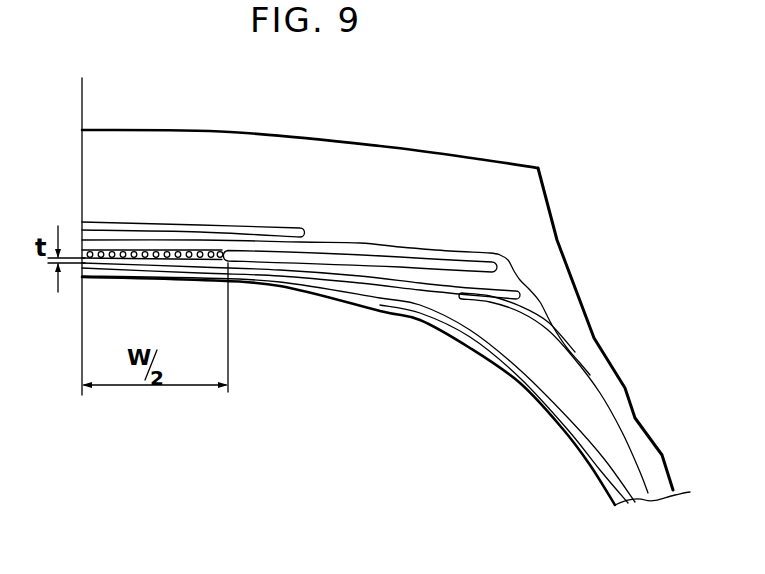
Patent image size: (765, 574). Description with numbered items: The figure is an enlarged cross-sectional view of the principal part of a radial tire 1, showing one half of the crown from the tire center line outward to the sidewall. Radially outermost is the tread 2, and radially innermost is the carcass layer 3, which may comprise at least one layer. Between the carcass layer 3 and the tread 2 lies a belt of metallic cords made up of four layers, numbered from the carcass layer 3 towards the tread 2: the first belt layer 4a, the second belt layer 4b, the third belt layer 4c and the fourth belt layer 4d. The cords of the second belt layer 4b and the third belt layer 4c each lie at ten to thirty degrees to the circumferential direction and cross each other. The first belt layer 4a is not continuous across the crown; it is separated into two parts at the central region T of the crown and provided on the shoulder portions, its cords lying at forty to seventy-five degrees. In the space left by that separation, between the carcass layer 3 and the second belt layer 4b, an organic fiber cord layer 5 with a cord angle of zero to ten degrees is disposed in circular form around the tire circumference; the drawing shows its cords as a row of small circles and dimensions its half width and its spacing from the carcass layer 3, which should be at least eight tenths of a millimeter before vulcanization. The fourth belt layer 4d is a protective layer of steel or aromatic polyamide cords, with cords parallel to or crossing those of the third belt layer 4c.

The tire 1 is at (600, 330).
The tread 2 is at (168, 148).
The carcass layer 3 is at (357, 290).
The first belt layer 4a is at (457, 287).
The second belt layer 4b is at (514, 289).
The third belt layer 4c is at (492, 257).
The fourth belt layer 4d is at (287, 226).
The organic fiber cord layer 5 is at (112, 250).
The central region of the crown T is at (238, 132).